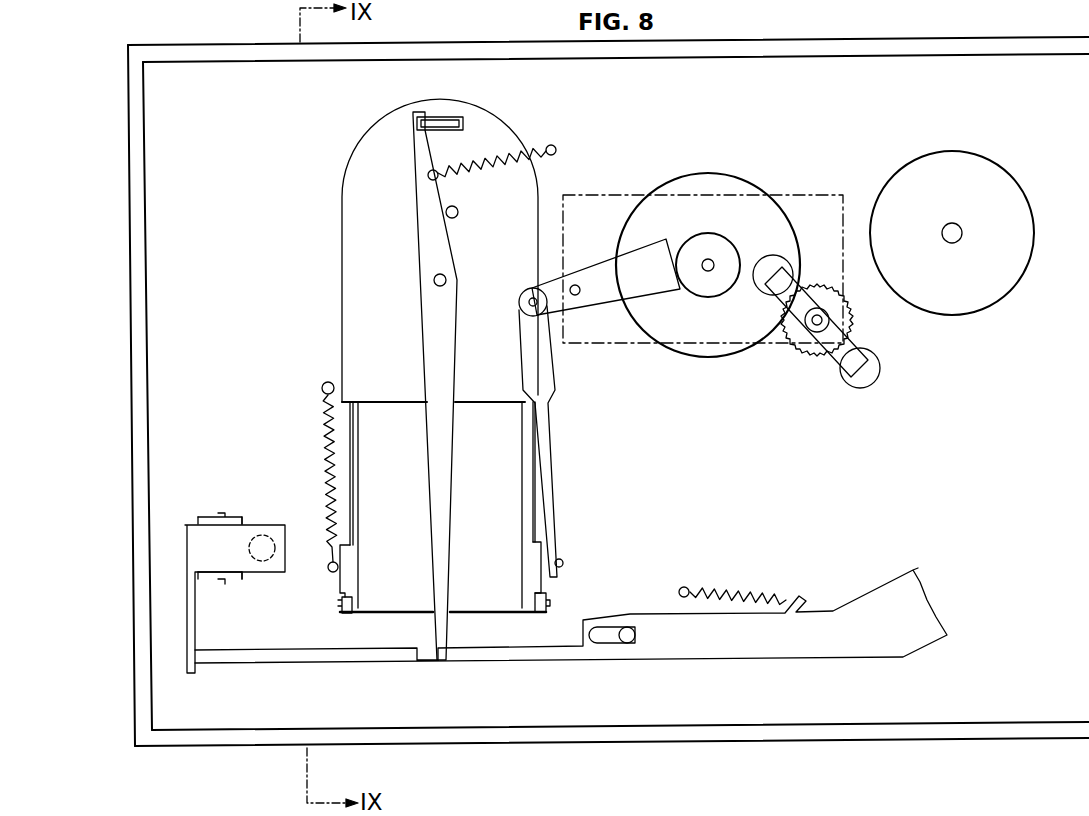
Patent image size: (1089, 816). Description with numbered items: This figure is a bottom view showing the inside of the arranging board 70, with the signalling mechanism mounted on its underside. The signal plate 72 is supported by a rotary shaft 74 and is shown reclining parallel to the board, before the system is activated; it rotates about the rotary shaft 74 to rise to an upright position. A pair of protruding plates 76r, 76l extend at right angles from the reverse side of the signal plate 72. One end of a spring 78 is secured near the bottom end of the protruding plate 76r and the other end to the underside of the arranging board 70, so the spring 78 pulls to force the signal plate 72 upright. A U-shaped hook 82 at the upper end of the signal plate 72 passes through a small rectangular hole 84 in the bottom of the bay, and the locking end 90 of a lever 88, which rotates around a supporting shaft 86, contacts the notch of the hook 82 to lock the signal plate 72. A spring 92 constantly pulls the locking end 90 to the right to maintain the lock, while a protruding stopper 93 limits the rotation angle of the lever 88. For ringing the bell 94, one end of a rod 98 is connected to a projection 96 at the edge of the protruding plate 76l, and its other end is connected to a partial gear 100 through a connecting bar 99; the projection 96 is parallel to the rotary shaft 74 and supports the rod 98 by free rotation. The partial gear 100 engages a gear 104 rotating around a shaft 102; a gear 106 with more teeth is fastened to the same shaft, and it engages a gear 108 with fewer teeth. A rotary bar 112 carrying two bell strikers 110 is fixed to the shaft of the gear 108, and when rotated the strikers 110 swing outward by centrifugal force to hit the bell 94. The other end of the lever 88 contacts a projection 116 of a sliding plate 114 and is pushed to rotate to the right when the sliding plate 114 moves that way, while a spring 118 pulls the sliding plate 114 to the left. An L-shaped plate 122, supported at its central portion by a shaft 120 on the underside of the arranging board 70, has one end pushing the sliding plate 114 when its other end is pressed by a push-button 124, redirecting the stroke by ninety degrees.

The arranging board 70 is at (688, 741).
The signal plate 72 is at (492, 440).
The rotary shaft 74 is at (340, 604).
The protruding plate 76r is at (338, 580).
The protruding plate 76l is at (540, 550).
The spring 78 is at (322, 432).
The U-shaped hook 82 is at (440, 116).
The rectangular hole 84 is at (464, 123).
The supporting shaft 86 is at (434, 280).
The lever 88 is at (425, 338).
The locking end 90 is at (415, 113).
The spring 92 is at (550, 149).
The protruding stopper 93 is at (458, 211).
The bell 94 is at (995, 165).
The projection 96 is at (565, 563).
The rod 98 is at (560, 470).
The connecting bar 99 is at (519, 308).
The partial gear 100 is at (598, 272).
The shaft 102 is at (576, 296).
The gear 104 is at (702, 298).
The gear 106 is at (721, 173).
The gear 108 is at (793, 352).
The bell strikers 110 is at (872, 386).
The rotary bar 112 is at (882, 356).
The sliding plate 114 is at (890, 583).
The projection 116 is at (423, 660).
The spring 118 is at (748, 590).
The shaft 120 is at (222, 515).
The L-shaped plate 122 is at (191, 524).
The push-button 124 is at (264, 534).